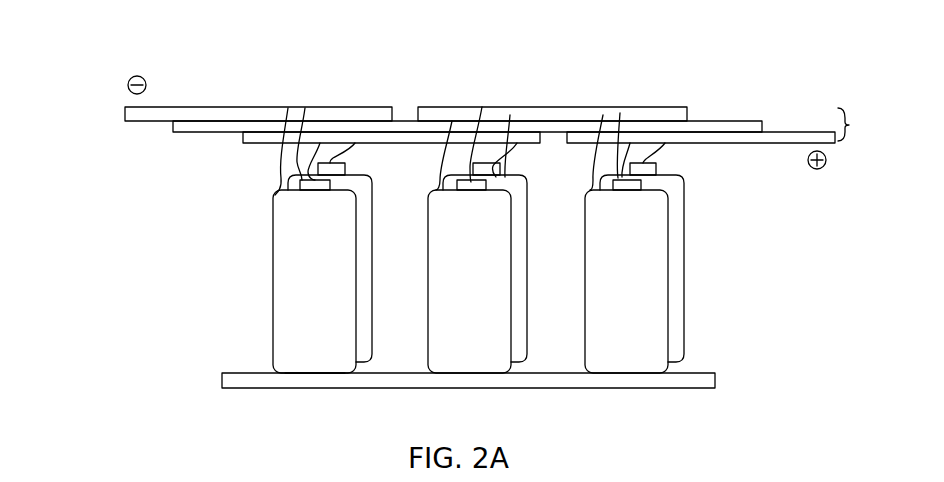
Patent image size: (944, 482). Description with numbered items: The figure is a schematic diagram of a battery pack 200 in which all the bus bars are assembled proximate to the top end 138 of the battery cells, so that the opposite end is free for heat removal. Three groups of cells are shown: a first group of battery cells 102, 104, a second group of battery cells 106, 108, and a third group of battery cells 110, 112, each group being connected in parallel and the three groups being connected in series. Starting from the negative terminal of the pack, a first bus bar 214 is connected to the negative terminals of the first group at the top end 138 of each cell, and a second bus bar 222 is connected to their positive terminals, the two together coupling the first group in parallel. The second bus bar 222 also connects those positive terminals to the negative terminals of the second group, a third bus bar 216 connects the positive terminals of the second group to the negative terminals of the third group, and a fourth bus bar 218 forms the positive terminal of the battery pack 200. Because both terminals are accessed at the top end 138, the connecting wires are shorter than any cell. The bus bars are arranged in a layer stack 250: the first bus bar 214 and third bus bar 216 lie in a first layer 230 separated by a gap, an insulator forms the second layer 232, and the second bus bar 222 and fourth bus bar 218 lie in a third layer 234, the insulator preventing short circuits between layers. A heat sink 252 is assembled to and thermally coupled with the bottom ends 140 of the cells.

The battery pack 200 is at (159, 37).
The battery cell 102 is at (272, 298).
The battery cell 104 is at (362, 362).
The battery cell 106 is at (453, 362).
The battery cell 108 is at (520, 362).
The battery cell 110 is at (668, 282).
The battery cell 112 is at (684, 230).
The top end 138 is at (340, 228).
The bottom end 140 is at (336, 365).
The first bus bar 214 is at (210, 107).
The third bus bar 216 is at (500, 107).
The fourth bus bar 218 is at (770, 145).
The second bus bar 222 is at (412, 145).
The first layer 230 is at (126, 114).
The second layer 232 is at (173, 126).
The third layer 234 is at (244, 137).
The layer stack 250 is at (866, 124).
The heat sink 252 is at (250, 388).